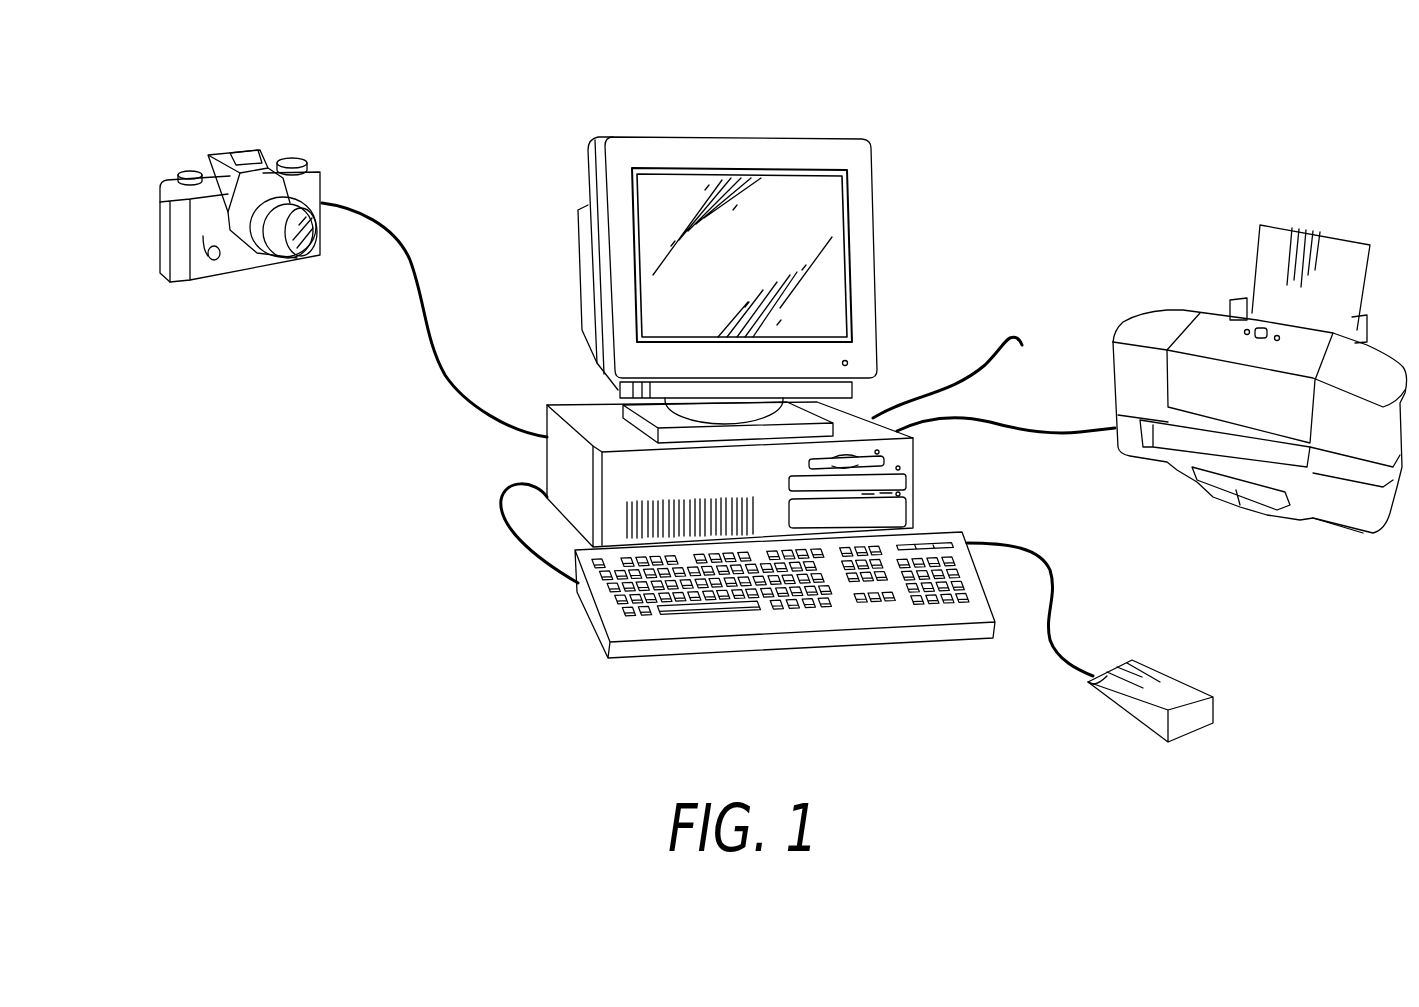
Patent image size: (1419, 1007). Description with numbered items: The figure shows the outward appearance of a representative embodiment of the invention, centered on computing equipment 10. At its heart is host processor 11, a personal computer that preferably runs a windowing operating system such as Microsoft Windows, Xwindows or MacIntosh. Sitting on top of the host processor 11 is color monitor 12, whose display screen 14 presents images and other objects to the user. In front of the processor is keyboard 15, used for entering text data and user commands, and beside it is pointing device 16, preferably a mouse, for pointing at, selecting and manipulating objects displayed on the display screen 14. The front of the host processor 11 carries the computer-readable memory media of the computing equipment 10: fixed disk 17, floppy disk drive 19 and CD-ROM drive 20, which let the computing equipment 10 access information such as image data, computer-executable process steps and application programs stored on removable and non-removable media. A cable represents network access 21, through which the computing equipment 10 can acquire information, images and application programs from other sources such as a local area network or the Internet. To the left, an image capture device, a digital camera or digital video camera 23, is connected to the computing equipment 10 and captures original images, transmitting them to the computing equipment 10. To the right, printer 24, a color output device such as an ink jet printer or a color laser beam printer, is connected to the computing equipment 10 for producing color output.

The computing equipment 10 is at (909, 135).
The host processor 11 is at (577, 402).
The color monitor 12 is at (713, 138).
The display screen 14 is at (832, 225).
The keyboard 15 is at (698, 630).
The pointing device 16 is at (1198, 722).
The fixed disk 17 is at (898, 512).
The floppy disk drive 19 is at (896, 483).
The CD-ROM drive 20 is at (875, 461).
The network access 21 is at (971, 382).
The digital camera 23 is at (156, 232).
The printer 24 is at (1177, 256).